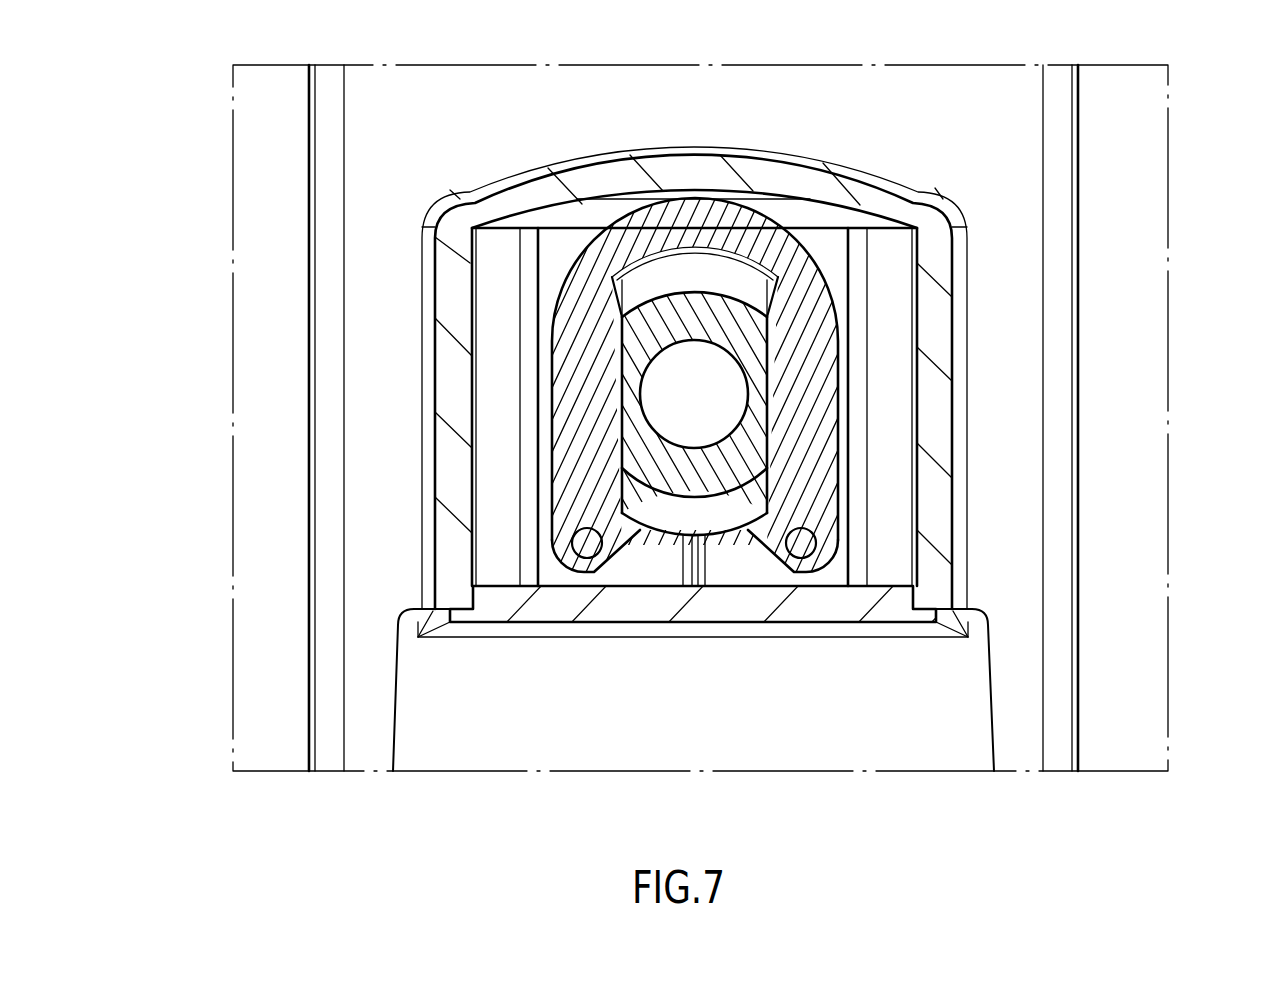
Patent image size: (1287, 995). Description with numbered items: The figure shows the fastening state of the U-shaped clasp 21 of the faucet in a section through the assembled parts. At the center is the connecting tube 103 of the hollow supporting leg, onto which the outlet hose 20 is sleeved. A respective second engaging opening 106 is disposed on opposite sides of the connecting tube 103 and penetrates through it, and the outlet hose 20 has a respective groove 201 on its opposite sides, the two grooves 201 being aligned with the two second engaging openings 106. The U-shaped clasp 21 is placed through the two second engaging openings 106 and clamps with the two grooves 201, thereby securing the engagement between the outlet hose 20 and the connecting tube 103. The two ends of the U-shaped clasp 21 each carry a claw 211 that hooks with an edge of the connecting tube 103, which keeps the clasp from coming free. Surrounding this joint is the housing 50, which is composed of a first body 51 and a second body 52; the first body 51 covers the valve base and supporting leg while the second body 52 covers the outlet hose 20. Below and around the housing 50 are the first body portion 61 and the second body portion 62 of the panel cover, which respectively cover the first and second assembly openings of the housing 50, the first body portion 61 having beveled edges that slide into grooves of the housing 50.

The housing 50 is at (300, 285).
The first body 51 is at (1023, 185).
The second body 52 is at (793, 172).
The first body portion 61 is at (958, 738).
The second body portion 62 is at (493, 600).
The outlet hose 20 is at (750, 338).
The groove 201 is at (770, 417).
The U-shaped clasp 21 is at (557, 393).
The claw 211 is at (640, 530).
The connecting tube 103 is at (680, 262).
The second engaging opening 106 is at (617, 205).